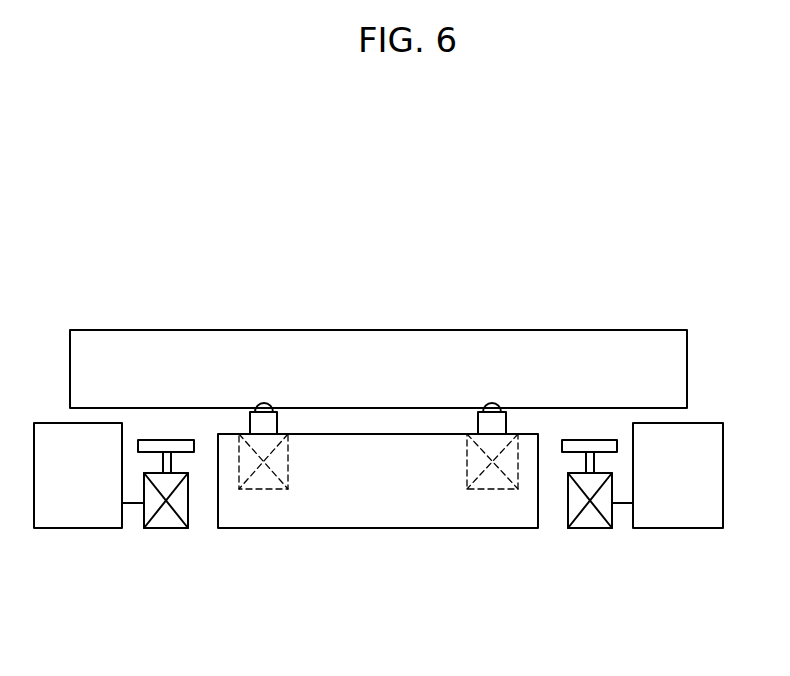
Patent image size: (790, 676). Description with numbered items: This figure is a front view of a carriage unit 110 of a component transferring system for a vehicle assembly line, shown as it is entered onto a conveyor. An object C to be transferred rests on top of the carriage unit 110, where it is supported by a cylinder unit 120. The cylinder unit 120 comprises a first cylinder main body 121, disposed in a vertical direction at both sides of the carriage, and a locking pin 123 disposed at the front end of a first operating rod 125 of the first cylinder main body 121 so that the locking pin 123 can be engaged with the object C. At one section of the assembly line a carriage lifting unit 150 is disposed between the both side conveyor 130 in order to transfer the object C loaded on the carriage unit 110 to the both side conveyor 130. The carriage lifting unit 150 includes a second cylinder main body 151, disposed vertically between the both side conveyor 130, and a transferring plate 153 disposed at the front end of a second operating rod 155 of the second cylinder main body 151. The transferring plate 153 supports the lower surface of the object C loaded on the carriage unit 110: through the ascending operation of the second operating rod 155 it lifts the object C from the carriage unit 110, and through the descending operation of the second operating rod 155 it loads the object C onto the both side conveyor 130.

The object C is at (464, 343).
The carriage unit 110 is at (342, 500).
The cylinder unit 120 is at (350, 369).
The first cylinder main body 121 is at (290, 462).
The locking pin 123 is at (262, 404).
The first operating rod 125 is at (259, 424).
The both side conveyor 130 is at (56, 506).
The carriage lifting unit 150 is at (378, 454).
The second cylinder main body 151 is at (170, 522).
The transferring plate 153 is at (167, 442).
The second operating rod 155 is at (172, 462).